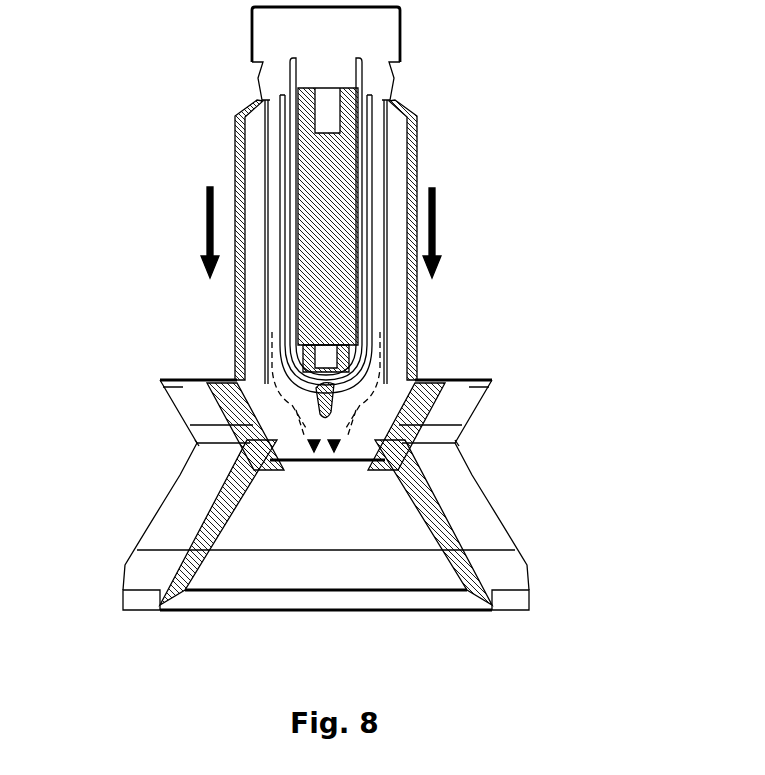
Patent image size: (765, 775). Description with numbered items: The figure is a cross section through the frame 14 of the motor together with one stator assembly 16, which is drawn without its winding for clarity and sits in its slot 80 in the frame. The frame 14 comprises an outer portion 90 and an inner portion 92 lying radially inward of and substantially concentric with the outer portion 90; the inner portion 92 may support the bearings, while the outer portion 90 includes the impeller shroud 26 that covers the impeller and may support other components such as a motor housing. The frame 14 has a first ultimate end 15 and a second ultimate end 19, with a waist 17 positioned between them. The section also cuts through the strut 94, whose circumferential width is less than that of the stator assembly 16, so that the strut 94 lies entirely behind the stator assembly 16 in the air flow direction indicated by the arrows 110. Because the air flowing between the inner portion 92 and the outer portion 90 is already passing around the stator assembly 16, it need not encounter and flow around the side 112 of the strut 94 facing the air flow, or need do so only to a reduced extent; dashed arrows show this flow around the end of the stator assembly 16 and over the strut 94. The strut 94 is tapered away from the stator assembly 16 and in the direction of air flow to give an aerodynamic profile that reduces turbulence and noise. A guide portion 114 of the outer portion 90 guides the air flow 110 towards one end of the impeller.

The frame 14 is at (487, 378).
The first ultimate end 15 is at (500, 386).
The stator assembly 16 is at (340, 159).
The waist 17 is at (188, 445).
The second ultimate end 19 is at (527, 602).
The impeller shroud 26 is at (470, 492).
The slot 80 is at (287, 318).
The outer portion 90 is at (212, 443).
The inner portion 92 is at (372, 298).
The strut 94 is at (302, 440).
The air flow direction 110 is at (212, 233).
The side of the strut 112 is at (355, 398).
The guide portion 114 is at (187, 396).